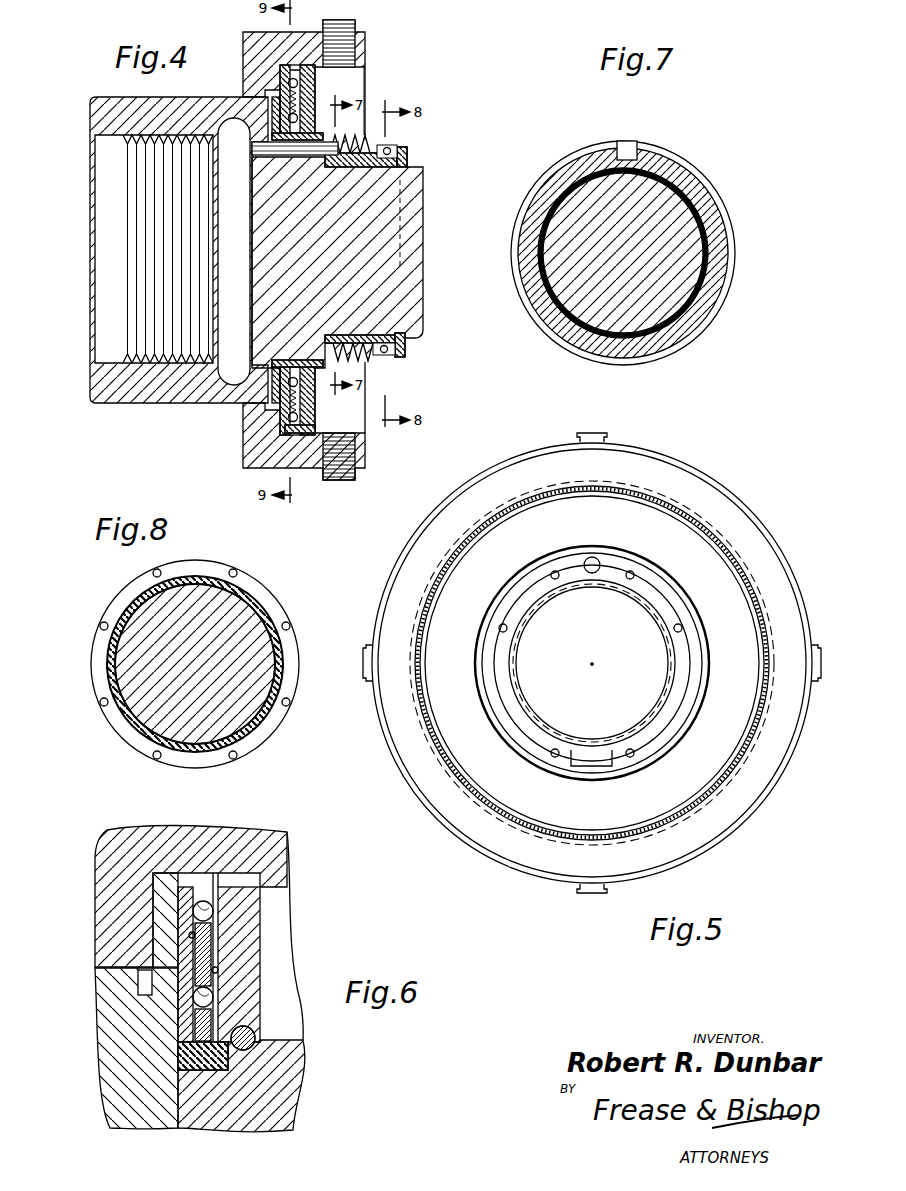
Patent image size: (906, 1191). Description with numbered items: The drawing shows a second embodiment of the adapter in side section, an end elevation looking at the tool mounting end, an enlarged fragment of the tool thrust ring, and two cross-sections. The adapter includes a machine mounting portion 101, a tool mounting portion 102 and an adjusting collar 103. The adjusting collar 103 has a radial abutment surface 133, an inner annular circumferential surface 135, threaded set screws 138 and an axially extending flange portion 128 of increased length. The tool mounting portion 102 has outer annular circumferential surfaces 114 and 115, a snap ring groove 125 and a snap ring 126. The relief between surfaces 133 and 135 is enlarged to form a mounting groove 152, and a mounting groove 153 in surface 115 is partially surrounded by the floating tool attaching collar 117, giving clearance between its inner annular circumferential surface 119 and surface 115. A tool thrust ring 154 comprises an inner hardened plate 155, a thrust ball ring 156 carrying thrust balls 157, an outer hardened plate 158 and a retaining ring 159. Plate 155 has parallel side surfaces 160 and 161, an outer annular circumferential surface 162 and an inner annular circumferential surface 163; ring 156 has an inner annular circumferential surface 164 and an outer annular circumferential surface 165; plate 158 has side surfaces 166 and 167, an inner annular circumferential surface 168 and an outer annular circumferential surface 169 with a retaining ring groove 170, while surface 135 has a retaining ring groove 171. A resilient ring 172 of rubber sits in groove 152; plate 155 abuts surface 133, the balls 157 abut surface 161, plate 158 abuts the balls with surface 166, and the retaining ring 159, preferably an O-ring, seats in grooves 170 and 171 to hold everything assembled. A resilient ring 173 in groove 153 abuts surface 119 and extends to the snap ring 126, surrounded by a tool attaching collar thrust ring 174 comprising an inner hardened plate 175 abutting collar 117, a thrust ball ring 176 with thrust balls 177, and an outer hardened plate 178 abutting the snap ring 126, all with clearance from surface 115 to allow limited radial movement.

In FIG. 4, the machine mounting portion 101 is at (117, 107).
In FIG. 4, the tool mounting portion 102 is at (398, 215).
In FIG. 7, the tool mounting portion 102 is at (672, 298).
In FIG. 5, the tool mounting portion 102 is at (553, 670).
In FIG. 8, the tool mounting portion 102 is at (237, 695).
In FIG. 4, the adjusting collar 103 is at (250, 40).
In FIG. 5, the adjusting collar 103 is at (700, 483).
In FIG. 4, the outer annular circumferential surface 114 is at (327, 342).
In FIG. 4, the outer annular circumferential surface 115 is at (400, 265).
In FIG. 4, the floating tool attaching collar 117 is at (352, 137).
In FIG. 7, the floating tool attaching collar 117 is at (695, 180).
In FIG. 4, the inner annular circumferential surface 119 is at (362, 165).
In FIG. 4, the snap ring groove 125 is at (412, 326).
In FIG. 5, the snap ring groove 125 is at (672, 655).
In FIG. 4, the snap ring 126 is at (406, 345).
In FIG. 5, the snap ring 126 is at (655, 600).
In FIG. 4, the axially extending flange portion 128 is at (365, 30).
In FIG. 4, the radial abutment surface 133 is at (280, 85).
In FIG. 4, the inner annular circumferential surface 135 is at (366, 80).
In FIG. 5, the inner annular circumferential surface 135 is at (697, 520).
In FIG. 4, the threaded set screws 138 is at (340, 20).
In FIG. 5, the threaded set screws 138 is at (600, 435).
In FIG. 4, the mounting groove 152 is at (285, 440).
In FIG. 6, the mounting groove 152 is at (205, 1070).
In FIG. 4, the mounting groove 153 is at (355, 336).
In FIG. 4, the tool thrust ring 154 is at (277, 385).
In FIG. 6, the tool thrust ring 154 is at (175, 1012).
In FIG. 4, the inner hardened plate 155 is at (282, 416).
In FIG. 6, the inner hardened plate 155 is at (185, 952).
In FIG. 4, the thrust ball ring 156 is at (287, 428).
In FIG. 6, the thrust ball ring 156 is at (210, 955).
In FIG. 4, the thrust balls 157 is at (298, 82).
In FIG. 6, the thrust balls 157 is at (200, 908).
In FIG. 4, the outer hardened plate 158 is at (303, 408).
In FIG. 6, the outer hardened plate 158 is at (240, 910).
In FIG. 4, the retaining ring 159 is at (310, 455).
In FIG. 5, the retaining ring 159 is at (483, 805).
In FIG. 6, the retaining ring 159 is at (272, 1058).
In FIG. 6, the side surface 160 is at (170, 920).
In FIG. 6, the side surface 161 is at (190, 935).
In FIG. 6, the outer annular circumferential surface 162 is at (190, 1070).
In FIG. 4, the inner annular circumferential surface 163 is at (285, 140).
In FIG. 6, the inner annular circumferential surface 163 is at (190, 880).
In FIG. 4, the inner annular circumferential surface 164 is at (296, 140).
In FIG. 6, the inner annular circumferential surface 164 is at (205, 880).
In FIG. 6, the outer annular circumferential surface 165 is at (200, 1070).
In FIG. 6, the side surface 166 is at (215, 970).
In FIG. 6, the side surface 167 is at (218, 972).
In FIG. 4, the inner annular circumferential surface 168 is at (300, 372).
In FIG. 6, the inner annular circumferential surface 168 is at (235, 885).
In FIG. 6, the outer annular circumferential surface 169 is at (235, 1070).
In FIG. 5, the retaining ring groove 170 is at (533, 505).
In FIG. 6, the retaining ring groove 170 is at (255, 1032).
In FIG. 5, the retaining ring groove 171 is at (553, 482).
In FIG. 6, the retaining ring groove 171 is at (248, 1062).
In FIG. 4, the resilient ring 172 is at (268, 32).
In FIG. 6, the resilient ring 172 is at (178, 1055).
In FIG. 4, the resilient ring 173 is at (368, 338).
In FIG. 7, the resilient ring 173 is at (712, 245).
In FIG. 8, the resilient ring 173 is at (112, 670).
In FIG. 4, the tool attaching collar thrust ring 174 is at (388, 153).
In FIG. 4, the inner hardened plate 175 is at (379, 358).
In FIG. 4, the thrust ball ring 176 is at (391, 148).
In FIG. 8, the thrust ball ring 176 is at (120, 728).
In FIG. 4, the thrust balls 177 is at (388, 352).
In FIG. 8, the thrust balls 177 is at (102, 622).
In FIG. 4, the outer hardened plate 178 is at (405, 156).